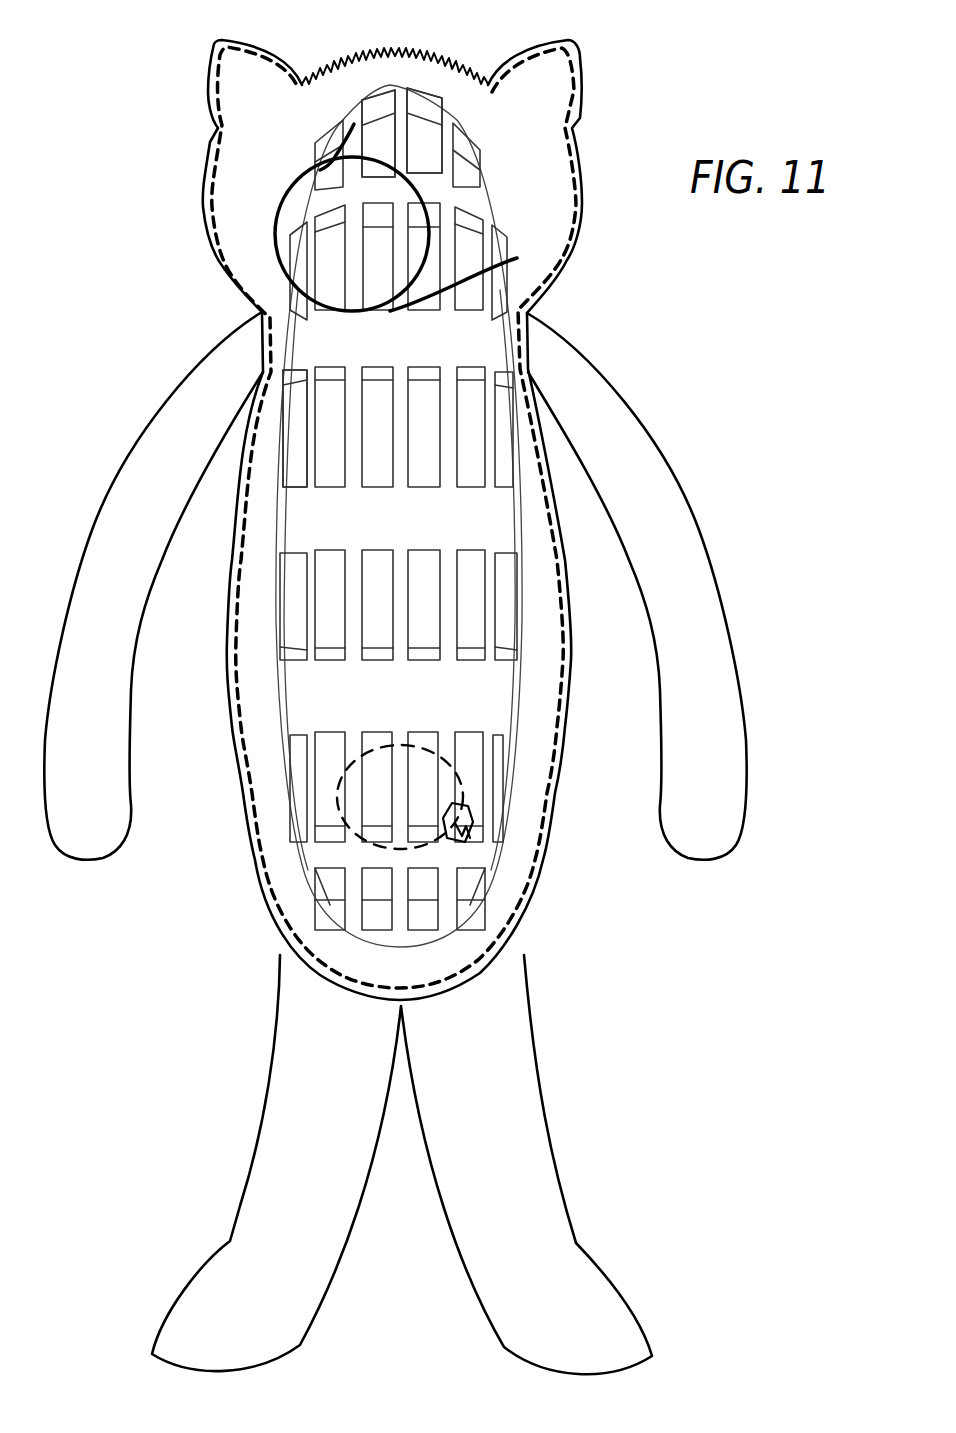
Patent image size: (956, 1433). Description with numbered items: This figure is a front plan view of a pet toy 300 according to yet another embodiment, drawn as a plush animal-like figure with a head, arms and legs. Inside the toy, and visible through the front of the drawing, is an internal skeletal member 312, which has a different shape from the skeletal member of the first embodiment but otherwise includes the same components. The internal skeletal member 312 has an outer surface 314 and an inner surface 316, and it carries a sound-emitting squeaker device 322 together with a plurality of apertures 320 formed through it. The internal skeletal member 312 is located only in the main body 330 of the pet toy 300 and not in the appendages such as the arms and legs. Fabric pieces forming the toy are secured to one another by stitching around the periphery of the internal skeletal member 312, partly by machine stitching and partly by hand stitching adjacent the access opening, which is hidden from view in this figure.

The pet toy 300 is at (690, 112).
The internal skeletal member 312 is at (483, 203).
The outer surface 314 is at (398, 100).
The inner surface 316 is at (372, 100).
The side window openings 320 is at (287, 550).
The sound-emitting squeaker device 322 is at (377, 790).
The main body 330 is at (578, 263).